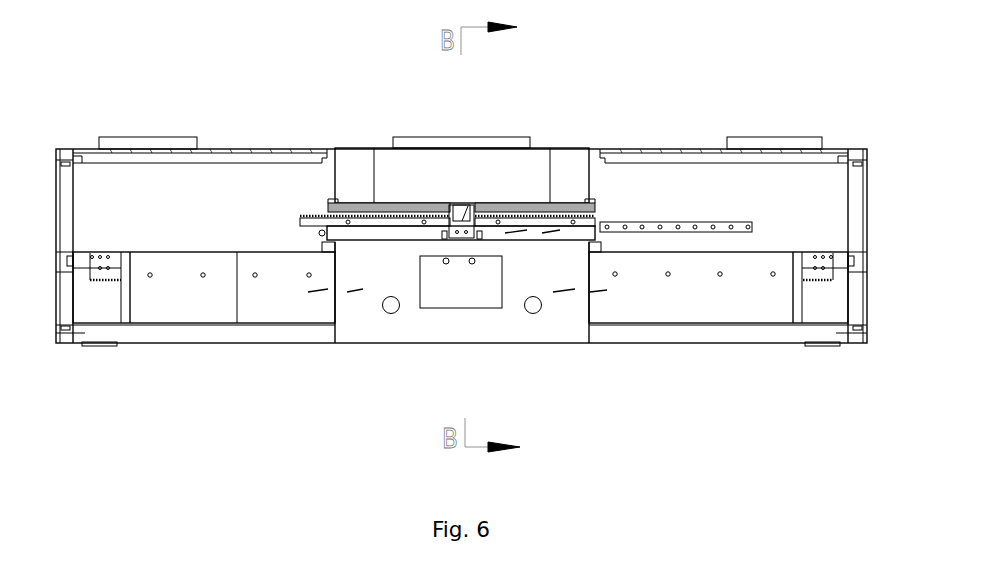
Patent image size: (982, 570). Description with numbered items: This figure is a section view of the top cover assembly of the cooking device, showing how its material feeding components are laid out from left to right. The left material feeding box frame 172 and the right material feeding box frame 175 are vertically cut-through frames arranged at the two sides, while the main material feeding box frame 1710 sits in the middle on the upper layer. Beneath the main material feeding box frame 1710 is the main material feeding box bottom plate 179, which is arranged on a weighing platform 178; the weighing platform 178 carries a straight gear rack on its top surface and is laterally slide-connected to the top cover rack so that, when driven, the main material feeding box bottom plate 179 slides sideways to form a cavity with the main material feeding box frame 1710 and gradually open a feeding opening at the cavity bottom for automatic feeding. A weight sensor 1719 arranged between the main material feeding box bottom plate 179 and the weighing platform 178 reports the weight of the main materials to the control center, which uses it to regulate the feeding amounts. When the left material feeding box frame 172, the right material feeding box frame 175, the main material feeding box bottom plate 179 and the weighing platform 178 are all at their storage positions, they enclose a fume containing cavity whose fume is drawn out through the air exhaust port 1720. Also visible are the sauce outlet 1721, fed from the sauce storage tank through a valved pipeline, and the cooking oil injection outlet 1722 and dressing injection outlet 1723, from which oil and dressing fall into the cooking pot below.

The left material feeding box frame 172 is at (178, 293).
The right material feeding box frame 175 is at (727, 297).
The weighing platform 178 is at (577, 226).
The main material feeding box bottom plate 179 is at (364, 207).
The main material feeding box frame 1710 is at (571, 167).
The weight sensor 1719 is at (468, 218).
The air exhaust port 1720 is at (469, 288).
The sauce outlet 1721 is at (390, 310).
The cooking oil injection outlet 1722 is at (446, 258).
The dressing injection outlet 1723 is at (473, 258).